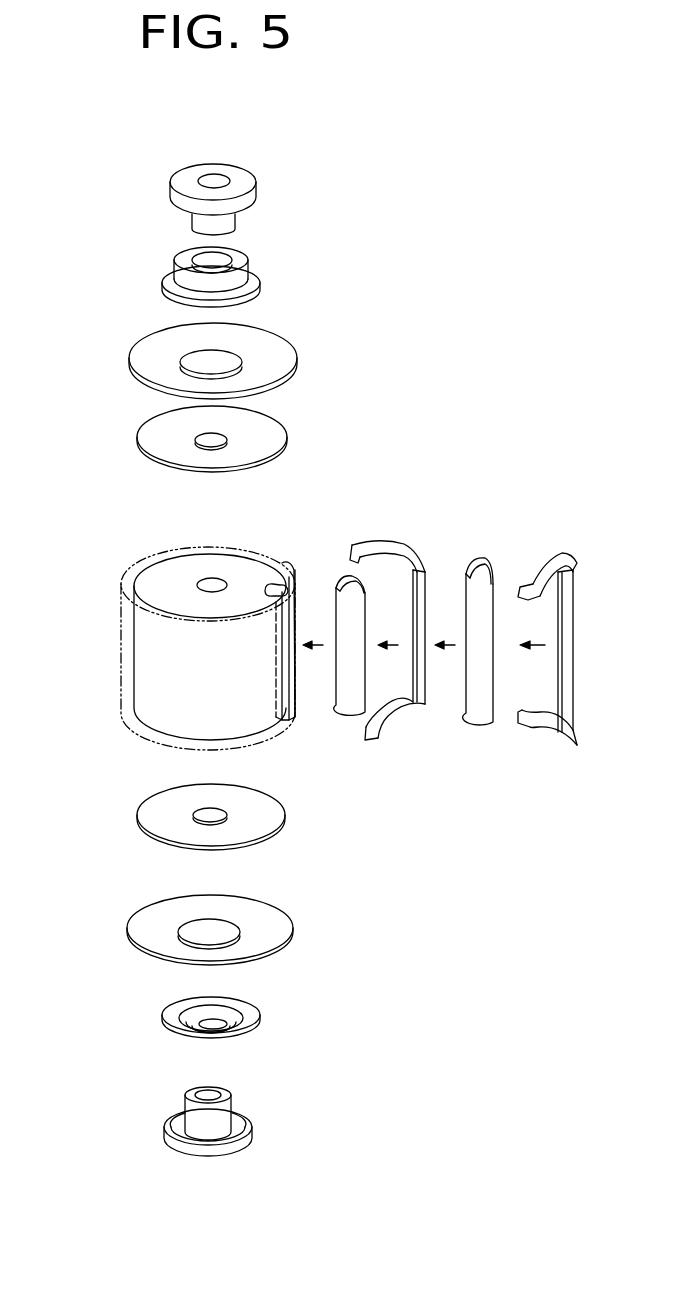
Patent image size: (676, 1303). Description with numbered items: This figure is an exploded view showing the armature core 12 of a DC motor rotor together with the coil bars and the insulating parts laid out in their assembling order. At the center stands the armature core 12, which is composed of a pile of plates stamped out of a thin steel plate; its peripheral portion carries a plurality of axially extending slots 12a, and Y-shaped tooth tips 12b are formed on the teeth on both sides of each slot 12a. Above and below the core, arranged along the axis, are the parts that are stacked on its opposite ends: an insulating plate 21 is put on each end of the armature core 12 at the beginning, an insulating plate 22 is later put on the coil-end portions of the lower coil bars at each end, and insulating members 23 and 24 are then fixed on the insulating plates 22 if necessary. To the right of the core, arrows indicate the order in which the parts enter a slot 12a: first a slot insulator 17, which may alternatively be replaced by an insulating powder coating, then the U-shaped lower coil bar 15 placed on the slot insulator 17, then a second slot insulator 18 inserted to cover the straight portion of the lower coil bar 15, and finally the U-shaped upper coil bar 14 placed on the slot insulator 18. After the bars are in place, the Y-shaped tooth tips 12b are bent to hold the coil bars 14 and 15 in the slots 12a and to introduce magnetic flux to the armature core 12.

The armature core 12 is at (172, 662).
The slot 12a is at (283, 590).
The Y-shaped tooth tip 12b is at (212, 585).
The upper coil bar 14 is at (560, 551).
The lower coil bar 15 is at (394, 542).
The slot insulator 17 is at (348, 705).
The slot insulator 18 is at (473, 567).
The insulating plate 21 is at (273, 437).
The insulating plate 22 is at (282, 352).
The insulating member 23 is at (245, 265).
The insulating member 24 is at (250, 183).